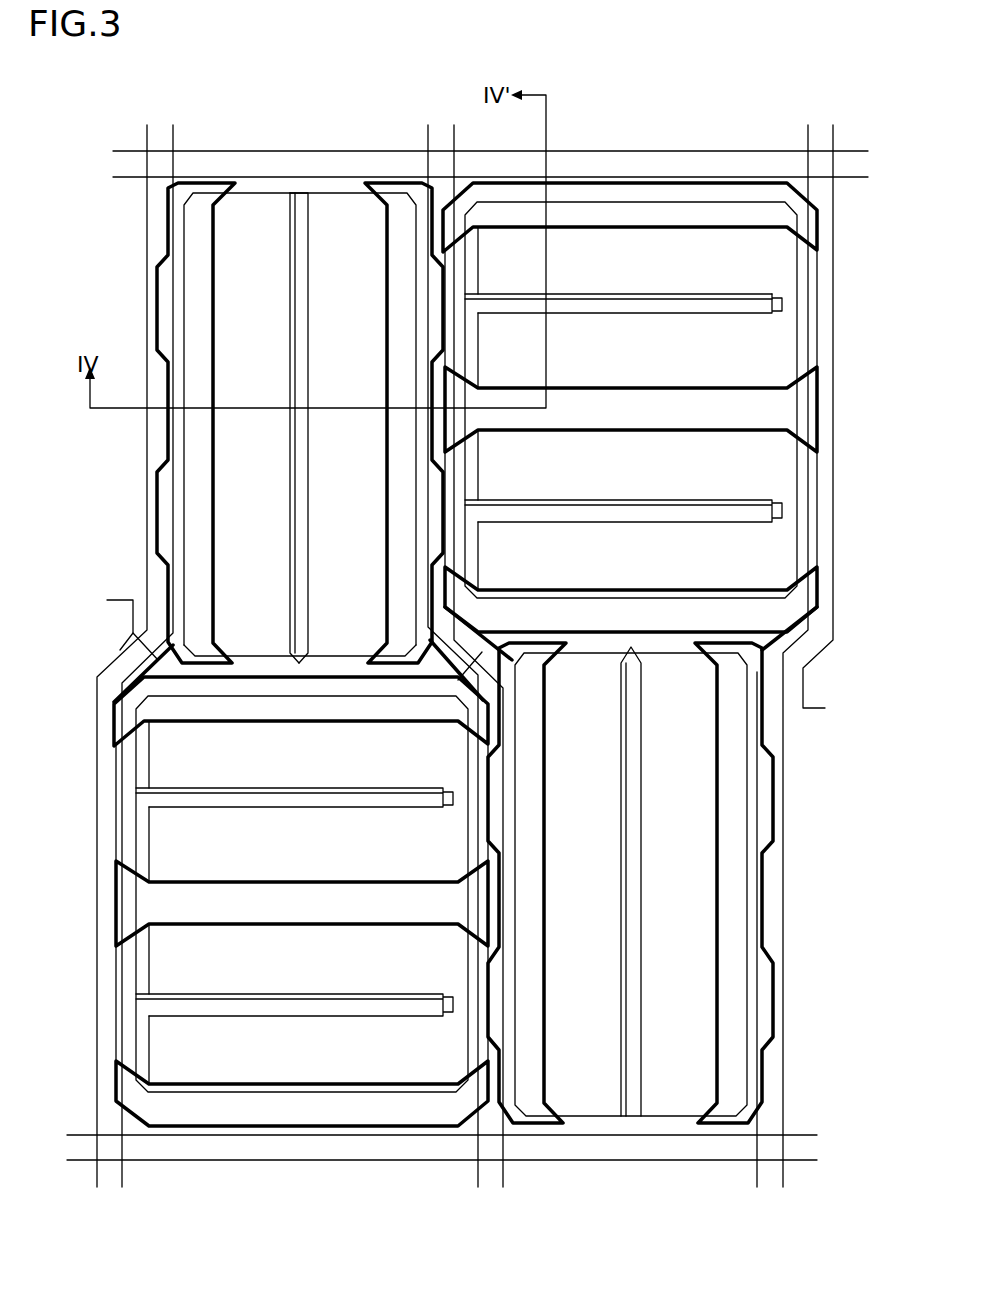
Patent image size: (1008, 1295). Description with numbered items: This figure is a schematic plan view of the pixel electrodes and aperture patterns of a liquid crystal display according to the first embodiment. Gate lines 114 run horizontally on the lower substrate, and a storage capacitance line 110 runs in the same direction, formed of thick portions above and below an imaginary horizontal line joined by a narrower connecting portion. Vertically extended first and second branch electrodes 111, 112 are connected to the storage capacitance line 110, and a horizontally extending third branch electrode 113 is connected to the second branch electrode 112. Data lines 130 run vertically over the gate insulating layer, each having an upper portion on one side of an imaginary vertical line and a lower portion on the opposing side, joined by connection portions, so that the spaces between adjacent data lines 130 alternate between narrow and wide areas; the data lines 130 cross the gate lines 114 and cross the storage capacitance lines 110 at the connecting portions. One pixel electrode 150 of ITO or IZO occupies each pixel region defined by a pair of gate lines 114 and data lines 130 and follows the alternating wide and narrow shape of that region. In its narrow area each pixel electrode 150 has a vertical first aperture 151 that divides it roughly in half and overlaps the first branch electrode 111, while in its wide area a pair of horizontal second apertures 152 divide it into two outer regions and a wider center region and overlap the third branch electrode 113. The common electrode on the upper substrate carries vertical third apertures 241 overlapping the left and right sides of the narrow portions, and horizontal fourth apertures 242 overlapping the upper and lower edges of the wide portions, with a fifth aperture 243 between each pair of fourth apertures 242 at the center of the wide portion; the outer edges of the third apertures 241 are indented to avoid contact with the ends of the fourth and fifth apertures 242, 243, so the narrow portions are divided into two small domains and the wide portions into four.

The storage capacitance line 110 is at (262, 655).
The first branch electrode 111 is at (312, 345).
The second branch electrode 112 is at (480, 458).
The third branch electrode 113 is at (640, 296).
The gate line 114 is at (307, 1162).
The data line 130 is at (157, 270).
The pixel electrode 150 is at (262, 195).
The first aperture 151 is at (284, 338).
The second aperture 152 is at (710, 321).
The third aperture 241 is at (209, 176).
The fourth aperture 242 is at (623, 178).
The fifth aperture 243 is at (614, 384).